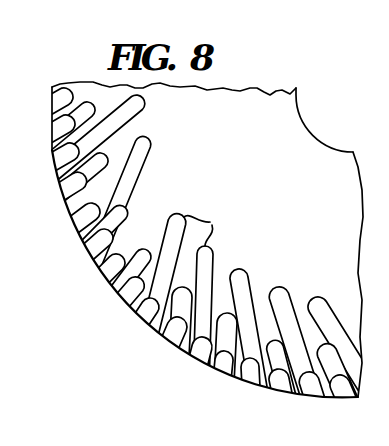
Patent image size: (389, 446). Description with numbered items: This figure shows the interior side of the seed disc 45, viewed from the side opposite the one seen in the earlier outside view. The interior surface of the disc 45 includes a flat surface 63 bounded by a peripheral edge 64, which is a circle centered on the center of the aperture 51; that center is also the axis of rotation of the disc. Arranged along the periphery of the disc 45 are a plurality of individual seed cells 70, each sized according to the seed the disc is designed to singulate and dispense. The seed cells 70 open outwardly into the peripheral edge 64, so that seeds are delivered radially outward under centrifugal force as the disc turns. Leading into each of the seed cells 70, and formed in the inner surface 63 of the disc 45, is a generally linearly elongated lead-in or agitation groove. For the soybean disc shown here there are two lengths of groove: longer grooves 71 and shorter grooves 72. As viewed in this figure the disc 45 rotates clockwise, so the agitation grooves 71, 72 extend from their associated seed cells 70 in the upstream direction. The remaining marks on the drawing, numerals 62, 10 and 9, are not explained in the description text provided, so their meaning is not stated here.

The seed disc 45 is at (257, 110).
The aperture 51 is at (333, 110).
The flat surface 63 is at (317, 208).
The peripheral edge 64 is at (52, 147).
The rim arc 62 is at (59, 213).
The finger sections 10 is at (141, 171).
The rim finger sections 9 is at (111, 286).
The longer agitation grooves 71 is at (238, 270).
The shorter agitation grooves 72 is at (262, 290).
The seed cells 70 is at (240, 397).